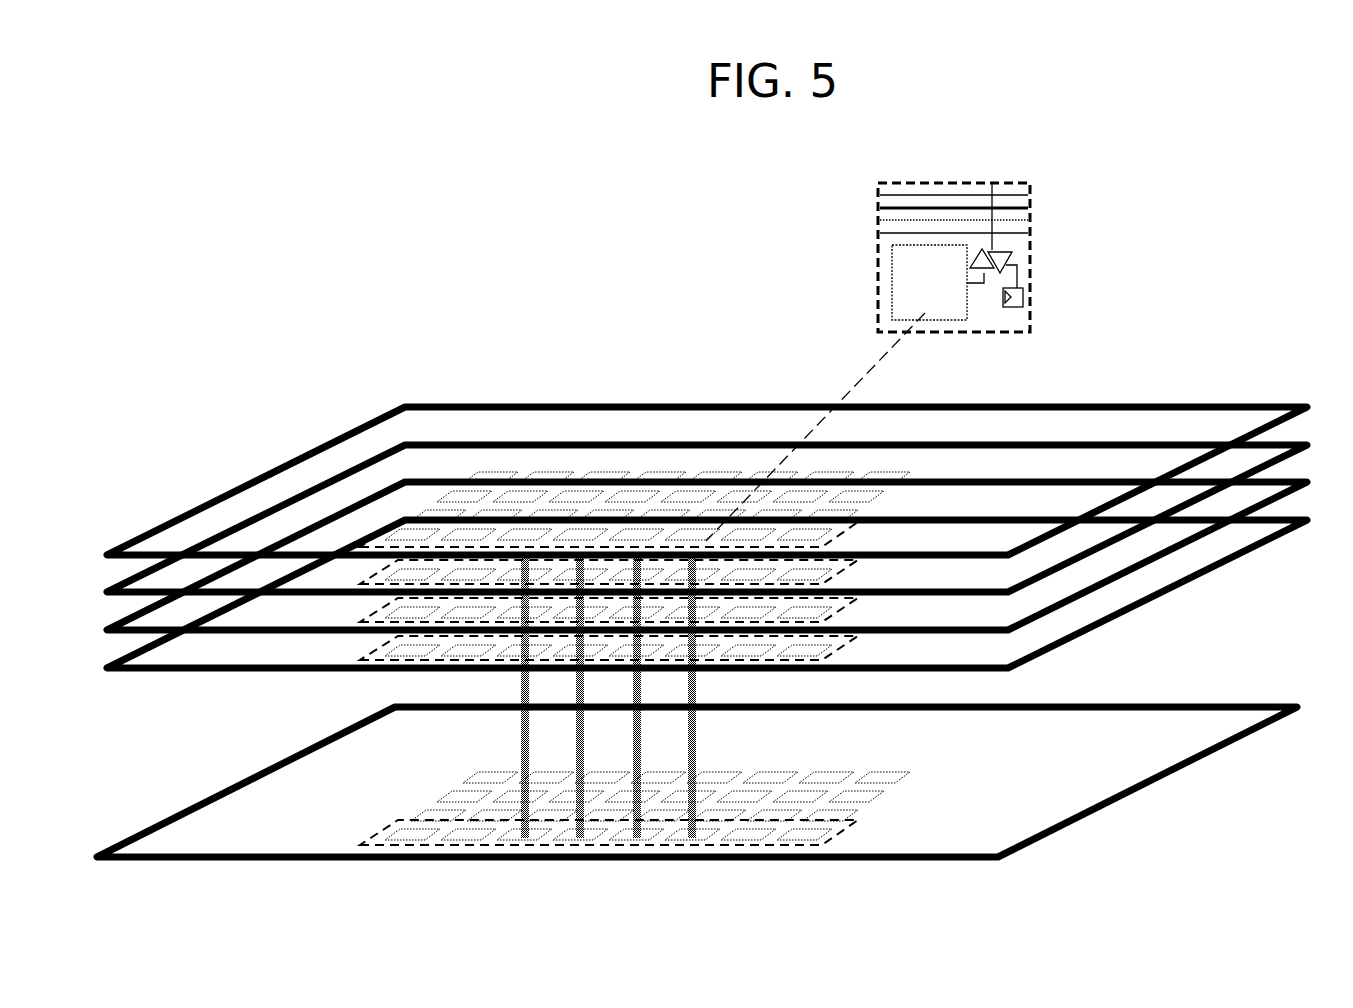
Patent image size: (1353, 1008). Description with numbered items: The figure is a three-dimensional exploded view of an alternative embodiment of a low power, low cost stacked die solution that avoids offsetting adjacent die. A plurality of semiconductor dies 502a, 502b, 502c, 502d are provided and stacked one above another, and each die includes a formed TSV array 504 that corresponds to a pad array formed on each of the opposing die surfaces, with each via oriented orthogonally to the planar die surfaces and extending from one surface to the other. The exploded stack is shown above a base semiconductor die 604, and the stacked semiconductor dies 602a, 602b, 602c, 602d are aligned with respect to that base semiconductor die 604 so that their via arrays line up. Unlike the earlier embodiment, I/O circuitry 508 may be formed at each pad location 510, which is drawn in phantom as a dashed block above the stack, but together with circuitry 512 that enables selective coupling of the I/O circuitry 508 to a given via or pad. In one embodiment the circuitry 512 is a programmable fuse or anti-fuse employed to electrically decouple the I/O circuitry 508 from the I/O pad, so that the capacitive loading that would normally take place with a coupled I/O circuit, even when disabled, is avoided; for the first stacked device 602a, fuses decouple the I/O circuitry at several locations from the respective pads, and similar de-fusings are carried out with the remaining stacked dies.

The semiconductor die 502a is at (262, 664).
The semiconductor die 502b is at (262, 626).
The semiconductor die 502c is at (262, 589).
The semiconductor die 502d is at (262, 547).
The TSV array 504 is at (460, 457).
The I/O circuitry 508 is at (1018, 265).
The pad location 510 is at (878, 267).
The circuitry 512 is at (985, 283).
The stacked semiconductor die 602a is at (843, 656).
The stacked semiconductor die 602b is at (843, 618).
The stacked semiconductor die 602c is at (843, 580).
The stacked semiconductor die 602d is at (827, 539).
The base semiconductor die 604 is at (840, 827).